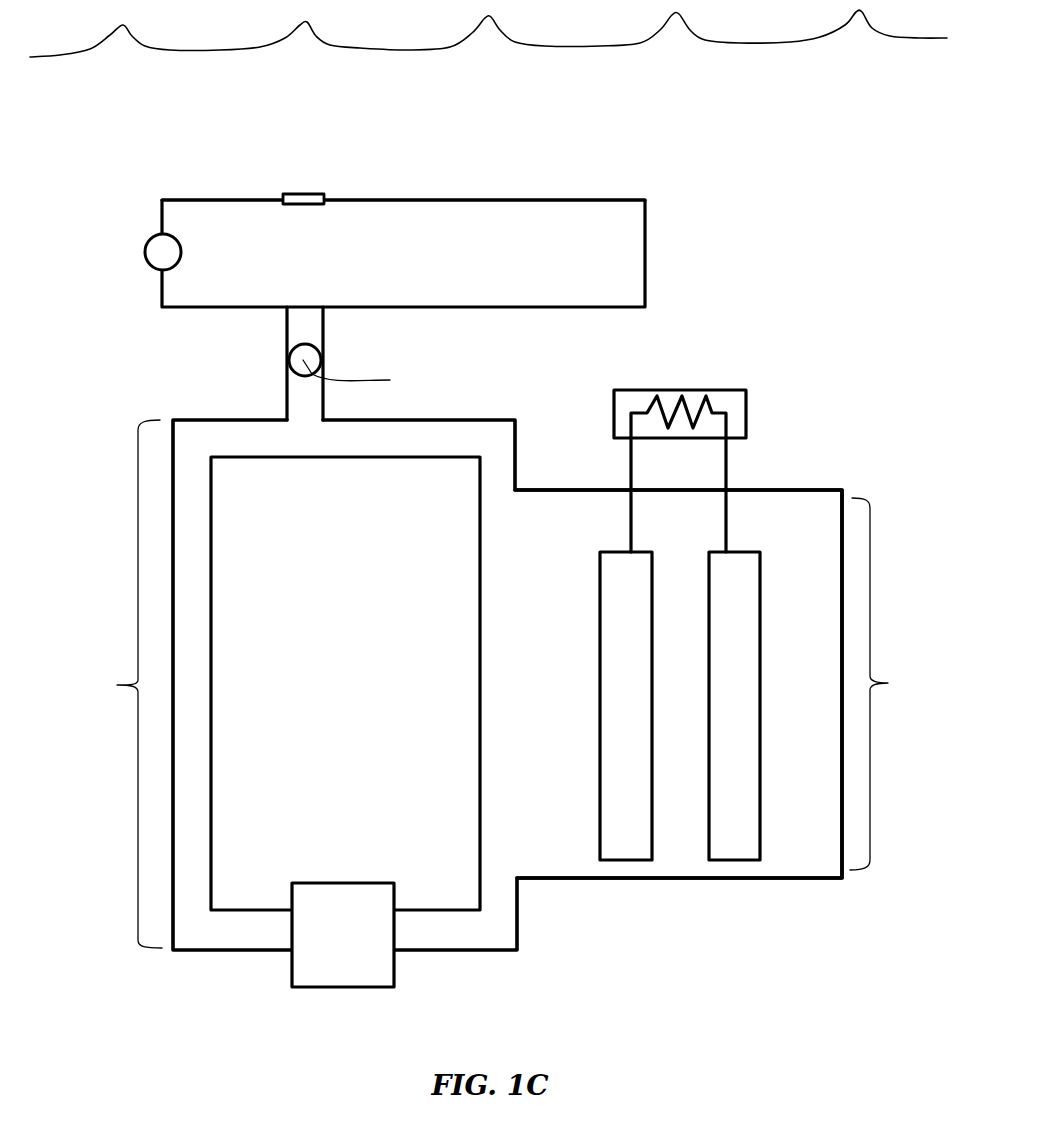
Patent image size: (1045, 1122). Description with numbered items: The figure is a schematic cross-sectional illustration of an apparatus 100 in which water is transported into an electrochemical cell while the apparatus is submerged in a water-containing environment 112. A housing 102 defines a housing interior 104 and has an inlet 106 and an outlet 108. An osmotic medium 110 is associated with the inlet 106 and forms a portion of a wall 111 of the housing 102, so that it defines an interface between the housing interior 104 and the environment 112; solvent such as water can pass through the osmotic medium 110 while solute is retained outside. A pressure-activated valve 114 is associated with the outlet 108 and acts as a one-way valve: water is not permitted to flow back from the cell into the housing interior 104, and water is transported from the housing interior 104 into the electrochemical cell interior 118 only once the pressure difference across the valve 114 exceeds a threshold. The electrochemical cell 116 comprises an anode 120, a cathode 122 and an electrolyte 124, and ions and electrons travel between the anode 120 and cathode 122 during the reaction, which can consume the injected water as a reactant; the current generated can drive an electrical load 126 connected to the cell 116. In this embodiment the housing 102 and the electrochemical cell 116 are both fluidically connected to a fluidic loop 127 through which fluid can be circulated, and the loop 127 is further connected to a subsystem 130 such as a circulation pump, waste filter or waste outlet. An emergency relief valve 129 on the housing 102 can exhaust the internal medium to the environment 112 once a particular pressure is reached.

The apparatus 100 is at (75, 174).
The housing 102 is at (383, 205).
The housing interior 104 is at (486, 263).
The inlet 106 is at (308, 194).
The outlet 108 is at (302, 308).
The osmotic medium 110 is at (267, 154).
The wall 111 is at (447, 199).
The water-containing environment 112 is at (649, 118).
The pressure-activated valve 114 is at (507, 669).
The electrochemical cell 116 is at (725, 589).
The electrochemical cell interior 118 is at (539, 549).
The anode 120 is at (609, 819).
The cathode 122 is at (717, 819).
The electrolyte 124 is at (680, 649).
The electrical load 126 is at (692, 390).
The fluidic loop 127 is at (453, 688).
The emergency relief valve 129 is at (162, 254).
The subsystem 130 is at (323, 946).